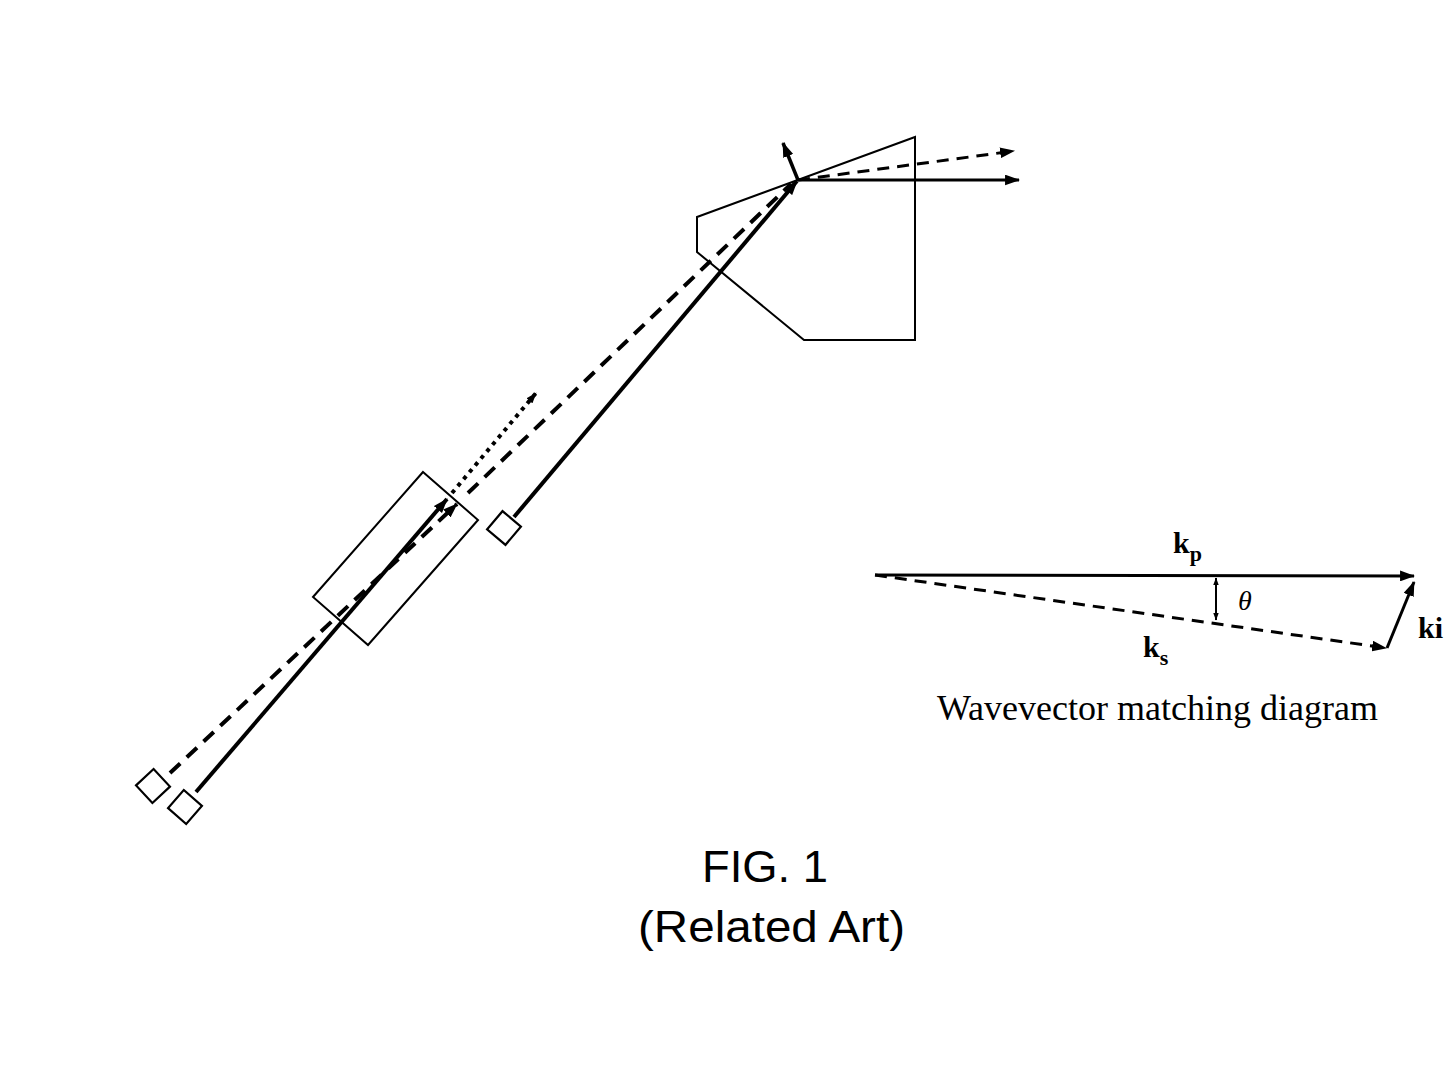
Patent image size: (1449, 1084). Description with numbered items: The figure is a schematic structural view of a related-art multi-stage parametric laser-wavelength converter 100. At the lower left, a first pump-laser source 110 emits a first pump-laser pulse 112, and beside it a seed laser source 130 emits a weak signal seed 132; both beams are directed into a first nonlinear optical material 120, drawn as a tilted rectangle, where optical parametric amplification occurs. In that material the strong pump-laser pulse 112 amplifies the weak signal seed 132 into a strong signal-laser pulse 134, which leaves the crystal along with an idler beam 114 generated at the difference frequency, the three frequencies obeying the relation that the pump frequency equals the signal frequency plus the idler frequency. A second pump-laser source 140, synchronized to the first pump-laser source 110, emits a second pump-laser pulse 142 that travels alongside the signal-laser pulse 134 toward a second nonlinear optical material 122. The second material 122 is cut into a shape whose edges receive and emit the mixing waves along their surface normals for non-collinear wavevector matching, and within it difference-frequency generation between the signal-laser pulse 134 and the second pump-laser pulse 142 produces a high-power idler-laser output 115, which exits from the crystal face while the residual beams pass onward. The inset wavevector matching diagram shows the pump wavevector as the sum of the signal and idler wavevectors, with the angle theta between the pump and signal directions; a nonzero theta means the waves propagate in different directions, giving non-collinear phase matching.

The multi-stage parametric laser-wavelength converter 100 is at (753, 813).
The first pump-laser source 110 is at (175, 813).
The first pump-laser pulse 112 is at (210, 780).
The idler beam 114 is at (492, 442).
The idler-laser output 115 is at (793, 173).
The first nonlinear optical material 120 is at (357, 543).
The second nonlinear optical material 122 is at (859, 157).
The seed laser source 130 is at (140, 797).
The signal seed 132 is at (206, 737).
The signal-laser pulse 134 is at (620, 350).
The second pump-laser source 140 is at (492, 543).
The second pump-laser pulse 142 is at (632, 380).